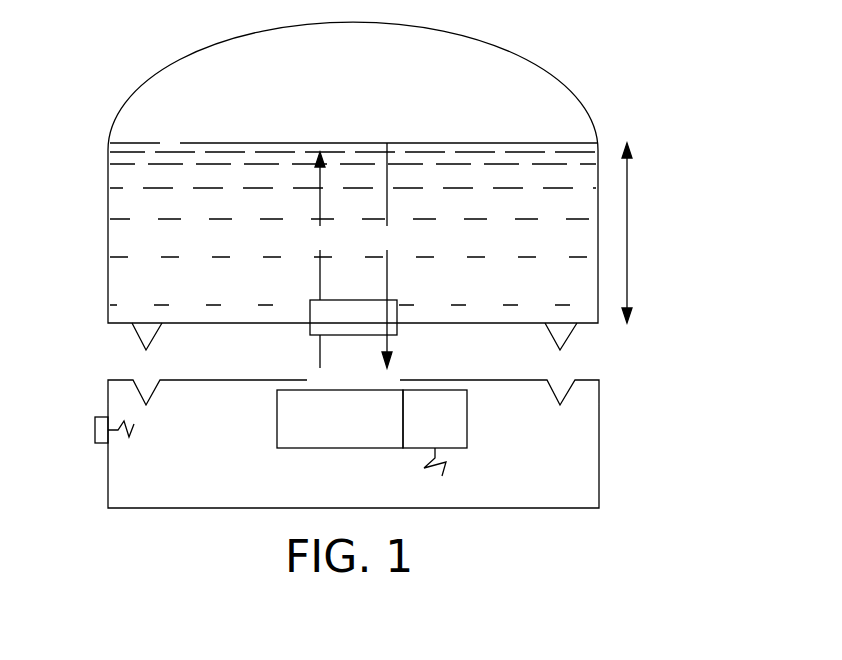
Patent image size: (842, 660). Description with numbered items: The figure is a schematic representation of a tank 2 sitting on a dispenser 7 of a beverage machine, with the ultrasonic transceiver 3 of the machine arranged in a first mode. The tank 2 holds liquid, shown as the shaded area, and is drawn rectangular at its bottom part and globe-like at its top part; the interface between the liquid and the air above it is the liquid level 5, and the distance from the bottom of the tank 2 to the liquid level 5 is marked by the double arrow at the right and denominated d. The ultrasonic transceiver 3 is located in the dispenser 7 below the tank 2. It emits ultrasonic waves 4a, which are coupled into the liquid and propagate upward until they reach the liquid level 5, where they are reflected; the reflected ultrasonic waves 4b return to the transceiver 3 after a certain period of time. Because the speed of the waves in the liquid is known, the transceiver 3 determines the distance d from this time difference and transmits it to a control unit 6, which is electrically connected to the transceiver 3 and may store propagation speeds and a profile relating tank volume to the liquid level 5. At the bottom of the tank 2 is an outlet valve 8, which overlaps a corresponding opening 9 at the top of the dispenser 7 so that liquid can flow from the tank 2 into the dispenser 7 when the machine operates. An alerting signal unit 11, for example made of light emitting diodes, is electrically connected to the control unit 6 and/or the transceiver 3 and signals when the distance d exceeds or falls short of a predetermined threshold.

The tank 2 is at (528, 25).
The ultrasonic transceiver 3 is at (188, 562).
The emitted ultrasonic waves 4a is at (308, 248).
The reflected ultrasonic waves 4b is at (375, 248).
The liquid level 5 is at (164, 152).
The control unit 6 is at (486, 530).
The dispenser 7 is at (540, 489).
The outlet valve 8 is at (347, 329).
The opening 9 is at (347, 375).
The alerting signal unit 11 is at (95, 428).